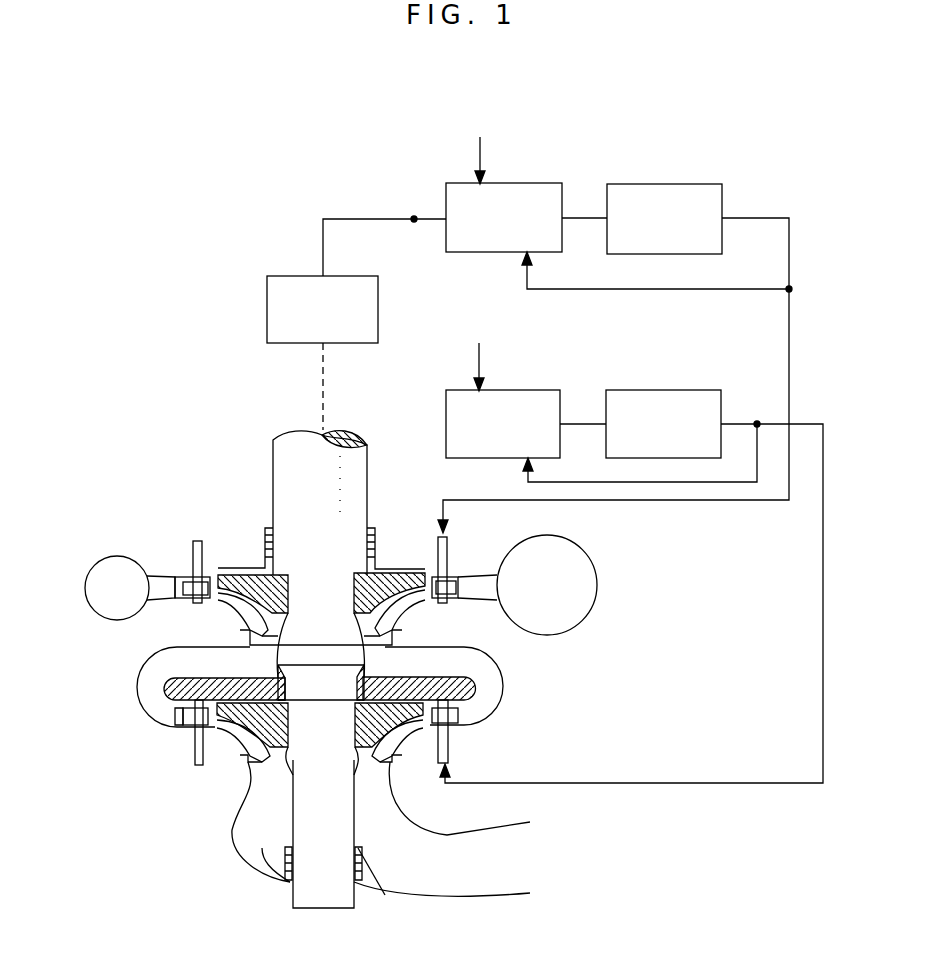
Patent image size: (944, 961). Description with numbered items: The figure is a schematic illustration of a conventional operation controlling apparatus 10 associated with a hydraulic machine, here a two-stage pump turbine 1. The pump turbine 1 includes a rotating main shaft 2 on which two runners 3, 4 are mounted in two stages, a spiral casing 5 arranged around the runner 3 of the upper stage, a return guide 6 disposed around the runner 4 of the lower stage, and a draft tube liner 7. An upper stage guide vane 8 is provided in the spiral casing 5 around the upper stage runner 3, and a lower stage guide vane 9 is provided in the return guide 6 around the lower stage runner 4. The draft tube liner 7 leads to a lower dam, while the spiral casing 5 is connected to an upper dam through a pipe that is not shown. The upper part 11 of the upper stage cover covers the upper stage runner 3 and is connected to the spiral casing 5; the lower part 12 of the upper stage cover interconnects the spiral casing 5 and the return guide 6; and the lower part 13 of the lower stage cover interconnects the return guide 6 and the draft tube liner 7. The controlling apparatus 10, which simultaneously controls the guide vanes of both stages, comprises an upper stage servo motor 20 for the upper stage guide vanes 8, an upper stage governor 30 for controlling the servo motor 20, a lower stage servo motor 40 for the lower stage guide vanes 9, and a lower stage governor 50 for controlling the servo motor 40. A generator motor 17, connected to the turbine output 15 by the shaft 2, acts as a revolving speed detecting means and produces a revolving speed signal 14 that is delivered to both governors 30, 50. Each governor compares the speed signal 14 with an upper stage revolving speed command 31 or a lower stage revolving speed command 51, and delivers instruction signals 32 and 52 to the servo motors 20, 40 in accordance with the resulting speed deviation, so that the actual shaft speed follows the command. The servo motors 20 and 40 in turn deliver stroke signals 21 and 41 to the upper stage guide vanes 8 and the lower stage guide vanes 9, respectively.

The two-stage pump turbine 1 is at (190, 840).
The rotating main shaft 2 is at (273, 472).
The upper stage runner 3 is at (405, 606).
The lower stage runner 4 is at (400, 745).
The spiral casing 5 is at (580, 552).
The return guide 6 is at (503, 680).
The draft tube liner 7 is at (240, 864).
The upper stage guide vane 8 is at (447, 562).
The lower stage guide vane 9 is at (450, 756).
The operation controlling apparatus 10 is at (746, 118).
The upper part of the upper stage cover 11 is at (402, 569).
The lower part of the upper stage cover 12 is at (235, 612).
The lower part of the lower stage cover 13 is at (222, 768).
The revolving speed signal 14 is at (360, 219).
The turbine output 15 is at (323, 396).
The generator motor 17 is at (267, 305).
The upper stage servo motor 20 is at (680, 184).
The stroke signal 21 is at (789, 232).
The upper stage governor 30 is at (526, 183).
The upper stage revolving speed command 31 is at (480, 160).
The instruction signal 32 is at (578, 218).
The lower stage servo motor 40 is at (679, 390).
The stroke signal 41 is at (812, 424).
The lower stage governor 50 is at (528, 390).
The lower stage revolving speed command 51 is at (479, 353).
The instruction signal 52 is at (580, 424).